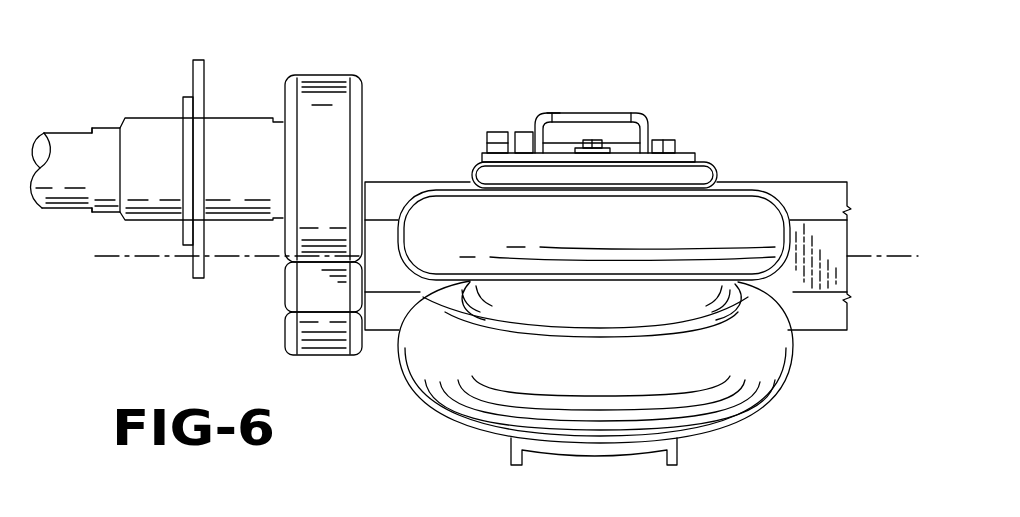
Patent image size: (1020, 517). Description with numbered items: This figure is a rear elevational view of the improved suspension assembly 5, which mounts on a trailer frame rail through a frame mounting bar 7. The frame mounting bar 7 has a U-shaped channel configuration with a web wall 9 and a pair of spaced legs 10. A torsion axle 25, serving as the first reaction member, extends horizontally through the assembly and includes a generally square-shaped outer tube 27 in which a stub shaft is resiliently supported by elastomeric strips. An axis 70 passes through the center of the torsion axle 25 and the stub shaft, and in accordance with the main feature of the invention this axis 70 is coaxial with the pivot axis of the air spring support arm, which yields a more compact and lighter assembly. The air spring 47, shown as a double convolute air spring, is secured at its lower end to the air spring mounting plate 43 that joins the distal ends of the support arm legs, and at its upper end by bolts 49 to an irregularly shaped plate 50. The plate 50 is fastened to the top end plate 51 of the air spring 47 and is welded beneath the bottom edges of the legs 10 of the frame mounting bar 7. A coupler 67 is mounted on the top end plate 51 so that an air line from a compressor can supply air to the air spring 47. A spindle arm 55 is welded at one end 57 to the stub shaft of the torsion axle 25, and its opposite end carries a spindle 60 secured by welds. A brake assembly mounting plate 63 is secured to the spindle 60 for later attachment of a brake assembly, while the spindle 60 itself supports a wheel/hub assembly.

The suspension assembly 5 is at (380, 54).
The frame mounting bar 7 is at (553, 113).
The web wall 9 is at (613, 113).
The spaced legs 10 is at (652, 134).
The torsion axle 25 is at (803, 183).
The outer tube 27 is at (818, 317).
The air spring mounting plate 43 is at (595, 458).
The air spring 47 is at (742, 393).
The bolts 49 is at (590, 140).
The plate 50 is at (683, 156).
The top end plate 51 is at (482, 172).
The spindle arm 55 is at (284, 284).
The spindle arm end 57 is at (320, 357).
The spindle 60 is at (143, 118).
The brake assembly mounting plate 63 is at (190, 82).
The coupler 67 is at (498, 130).
The axis 70 is at (898, 255).